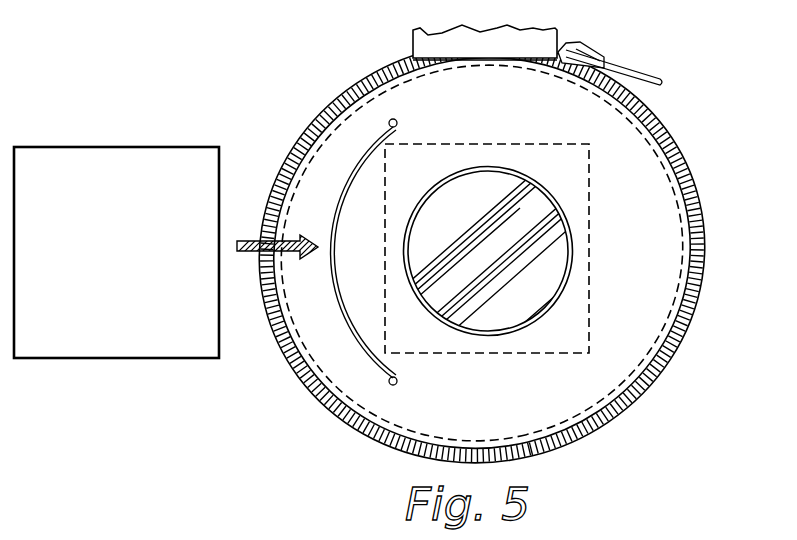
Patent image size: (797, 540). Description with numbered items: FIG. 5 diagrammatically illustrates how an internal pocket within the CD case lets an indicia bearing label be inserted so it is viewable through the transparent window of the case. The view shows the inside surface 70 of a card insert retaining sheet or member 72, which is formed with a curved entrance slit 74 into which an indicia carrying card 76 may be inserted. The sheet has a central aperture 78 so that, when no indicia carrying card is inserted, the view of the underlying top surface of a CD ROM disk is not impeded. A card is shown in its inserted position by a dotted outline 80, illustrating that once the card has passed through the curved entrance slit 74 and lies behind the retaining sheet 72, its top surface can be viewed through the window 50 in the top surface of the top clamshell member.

The window 50 is at (508, 270).
The inside surface 70 is at (498, 113).
The card insert retaining sheet 72 is at (612, 177).
The curved entrance slit 74 is at (363, 153).
The indicia carrying card 76 is at (108, 147).
The central aperture 78 is at (527, 173).
The dotted outline 80 is at (592, 268).